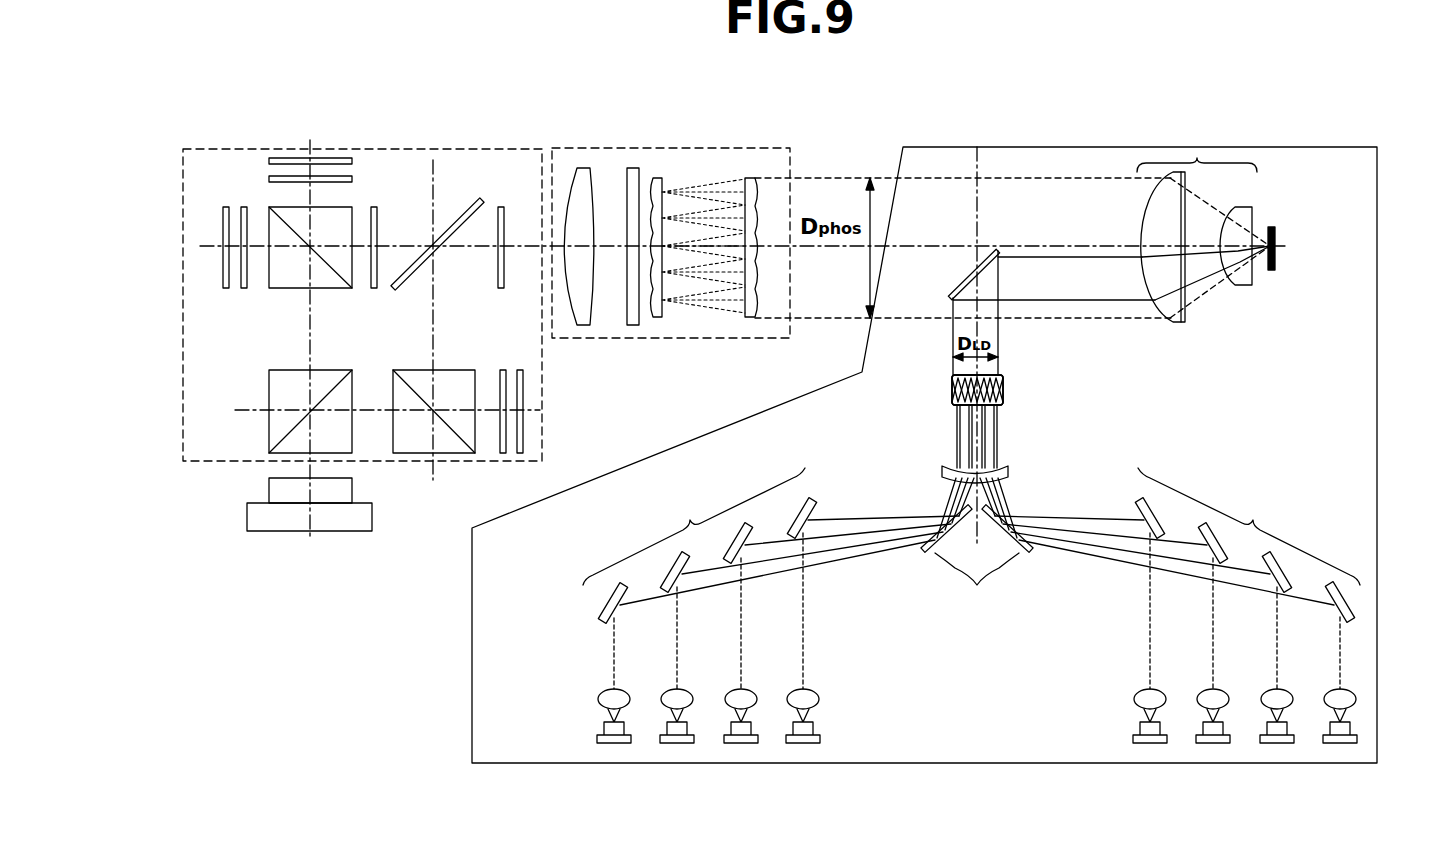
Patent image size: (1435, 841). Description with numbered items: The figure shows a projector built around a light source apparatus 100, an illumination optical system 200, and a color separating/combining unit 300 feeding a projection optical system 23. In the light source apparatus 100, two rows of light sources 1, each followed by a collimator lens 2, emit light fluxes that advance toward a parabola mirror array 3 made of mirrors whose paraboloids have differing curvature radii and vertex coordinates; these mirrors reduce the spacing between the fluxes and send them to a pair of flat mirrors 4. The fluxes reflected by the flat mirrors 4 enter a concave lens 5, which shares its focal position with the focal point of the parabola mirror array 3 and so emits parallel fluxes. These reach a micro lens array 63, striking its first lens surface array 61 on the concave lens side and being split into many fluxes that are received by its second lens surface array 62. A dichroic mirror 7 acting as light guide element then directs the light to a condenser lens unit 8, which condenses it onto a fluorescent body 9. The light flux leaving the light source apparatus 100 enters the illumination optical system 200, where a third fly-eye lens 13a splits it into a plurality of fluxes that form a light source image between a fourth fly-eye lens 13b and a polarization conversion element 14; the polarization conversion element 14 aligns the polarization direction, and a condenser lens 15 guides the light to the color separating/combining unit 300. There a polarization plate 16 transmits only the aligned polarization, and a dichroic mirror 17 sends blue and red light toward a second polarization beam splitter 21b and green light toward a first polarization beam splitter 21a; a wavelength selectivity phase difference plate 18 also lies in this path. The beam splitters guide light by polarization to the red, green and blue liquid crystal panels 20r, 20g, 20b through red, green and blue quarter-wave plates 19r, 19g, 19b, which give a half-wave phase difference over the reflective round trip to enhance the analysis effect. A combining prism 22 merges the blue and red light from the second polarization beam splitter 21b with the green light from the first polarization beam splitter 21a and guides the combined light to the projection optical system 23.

The light source 1 is at (822, 740).
The collimator lens 2 is at (820, 698).
The parabola mirror array 3 is at (971, 545).
The flat mirror 4 is at (977, 560).
The concave lens 5 is at (1010, 472).
The dichroic mirror 7 is at (962, 282).
The condenser lens unit 8 is at (1197, 158).
The fluorescent body 9 is at (1277, 250).
The first lens surface array 61 is at (952, 404).
The second lens surface array 62 is at (952, 376).
The micro lens array 63 is at (1003, 388).
The light source apparatus 100 is at (937, 147).
The illumination optical system 200 is at (787, 148).
The color separating/combining unit 300 is at (425, 149).
The third fly-eye lens 13a is at (748, 178).
The fourth fly-eye lens 13b is at (658, 178).
The polarization conversion element 14 is at (631, 168).
The condenser lens 15 is at (582, 168).
The polarization plate 16 is at (501, 207).
The dichroic mirror 17 is at (458, 224).
The wavelength selectivity phase difference plate 18 is at (374, 207).
The red color λ/4 plate 19r is at (269, 179).
The green color λ/4 plate 19g is at (503, 370).
The blue color λ/4 plate 19b is at (245, 290).
The red color liquid crystal panel 20r is at (292, 158).
The green color liquid crystal panel 20g is at (523, 388).
The blue color liquid crystal panel 20b is at (226, 290).
The first polarization beam splitter 21a is at (453, 380).
The second polarization beam splitter 21b is at (328, 290).
The combining prism 22 is at (269, 430).
The projection optical system 23 is at (333, 533).